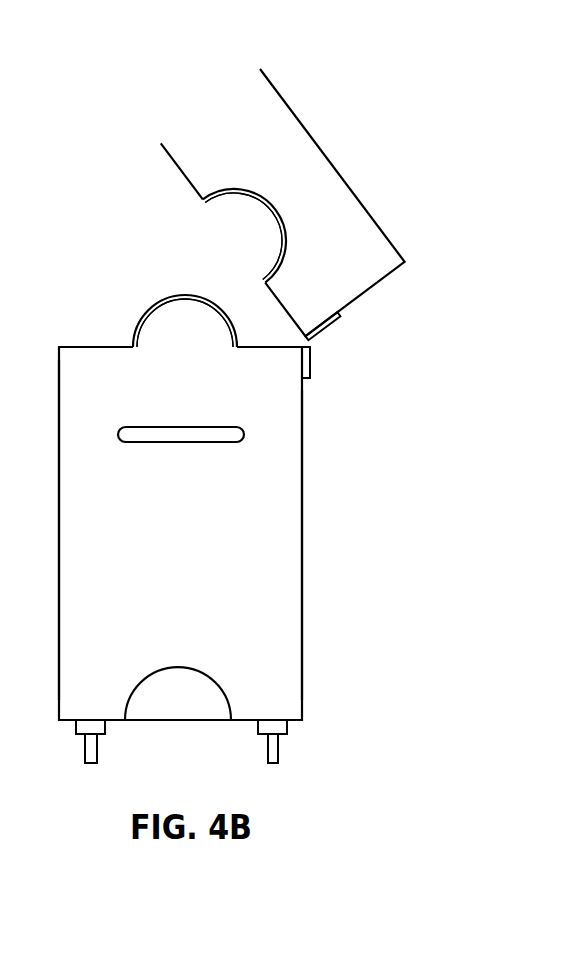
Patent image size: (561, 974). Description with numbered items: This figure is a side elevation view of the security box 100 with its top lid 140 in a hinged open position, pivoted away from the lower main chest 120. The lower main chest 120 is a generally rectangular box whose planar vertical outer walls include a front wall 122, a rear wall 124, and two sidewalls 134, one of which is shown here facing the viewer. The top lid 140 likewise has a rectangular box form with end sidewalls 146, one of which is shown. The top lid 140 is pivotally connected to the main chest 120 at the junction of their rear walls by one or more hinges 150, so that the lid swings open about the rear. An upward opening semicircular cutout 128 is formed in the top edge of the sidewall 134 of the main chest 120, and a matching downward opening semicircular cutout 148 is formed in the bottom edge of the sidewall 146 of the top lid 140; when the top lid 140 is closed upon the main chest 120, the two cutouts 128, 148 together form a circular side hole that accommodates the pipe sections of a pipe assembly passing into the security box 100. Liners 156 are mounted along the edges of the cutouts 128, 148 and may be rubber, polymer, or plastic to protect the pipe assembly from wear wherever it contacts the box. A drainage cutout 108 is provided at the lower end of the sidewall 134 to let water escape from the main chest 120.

The security box 100 is at (118, 262).
The drainage cutout 108 is at (168, 695).
The lower main chest 120 is at (325, 678).
The front wall 122 is at (65, 548).
The rear wall 124 is at (304, 567).
The upward opening semicircular cutout 128 is at (165, 360).
The sidewall 134 is at (190, 540).
The top lid 140 is at (360, 170).
The sidewall 146 is at (258, 151).
The downward opening semicircular cutout 148 is at (237, 222).
The hinge 150 is at (308, 347).
The liner 156 is at (137, 370).